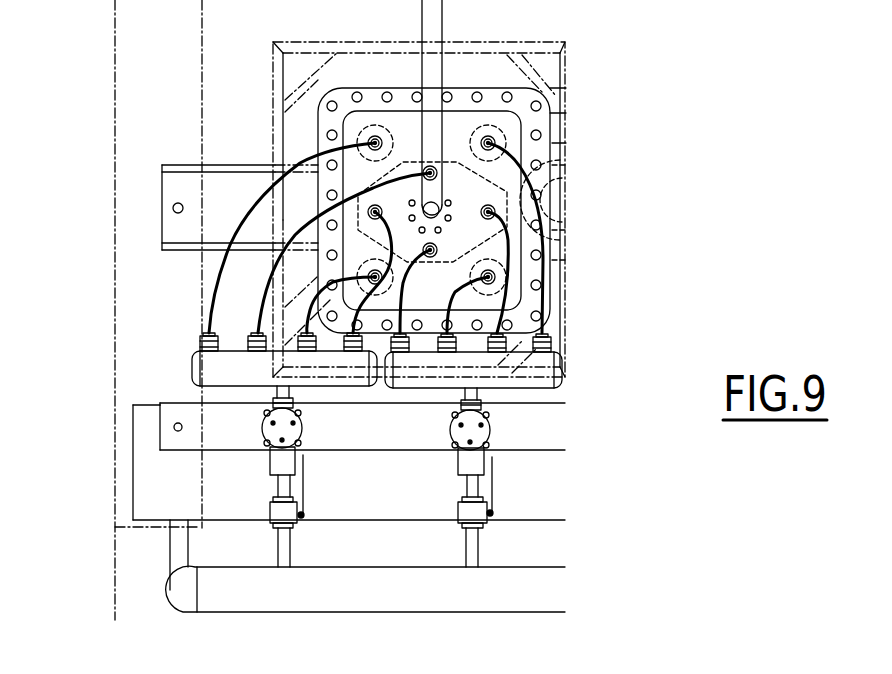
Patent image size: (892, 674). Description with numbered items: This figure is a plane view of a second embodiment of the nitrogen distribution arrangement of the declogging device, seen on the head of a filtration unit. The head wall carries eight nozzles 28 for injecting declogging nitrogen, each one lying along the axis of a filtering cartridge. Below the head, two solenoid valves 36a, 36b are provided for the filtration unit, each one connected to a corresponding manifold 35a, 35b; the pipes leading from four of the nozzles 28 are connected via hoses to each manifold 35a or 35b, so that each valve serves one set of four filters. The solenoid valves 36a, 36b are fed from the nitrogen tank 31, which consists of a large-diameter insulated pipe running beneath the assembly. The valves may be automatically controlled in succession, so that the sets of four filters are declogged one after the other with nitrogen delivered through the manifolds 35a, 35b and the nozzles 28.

The nozzle 28 is at (375, 141).
The nitrogen tank 31 is at (290, 605).
The manifold 35a is at (195, 362).
The manifold 35b is at (552, 363).
The solenoid valve 36a is at (294, 430).
The solenoid valve 36b is at (484, 432).